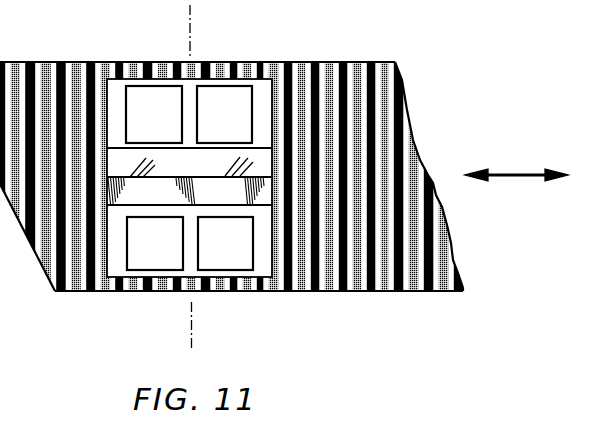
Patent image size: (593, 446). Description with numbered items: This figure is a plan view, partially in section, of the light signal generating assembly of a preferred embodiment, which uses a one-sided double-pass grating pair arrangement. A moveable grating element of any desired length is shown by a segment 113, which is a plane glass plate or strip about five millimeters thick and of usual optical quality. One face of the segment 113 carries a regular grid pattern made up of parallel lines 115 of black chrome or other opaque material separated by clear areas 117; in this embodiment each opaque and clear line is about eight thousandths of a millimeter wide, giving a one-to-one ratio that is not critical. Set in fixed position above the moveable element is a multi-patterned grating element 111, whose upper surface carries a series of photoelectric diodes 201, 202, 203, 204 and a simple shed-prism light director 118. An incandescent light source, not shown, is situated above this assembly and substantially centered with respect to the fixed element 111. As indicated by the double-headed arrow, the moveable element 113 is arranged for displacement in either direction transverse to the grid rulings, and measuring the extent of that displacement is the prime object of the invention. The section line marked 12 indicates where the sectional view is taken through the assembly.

The section line 12- 12 is at (143, 21).
The multi-patterned grating element 111 is at (121, 114).
The moveable grating element 113 is at (308, 62).
The parallel lines 115 is at (382, 291).
The clear areas 117 is at (365, 291).
The shed-prism light director 118 is at (203, 173).
The photoelectric diode 201 is at (239, 126).
The photoelectric diode 202 is at (139, 126).
The photoelectric diode 203 is at (140, 255).
The photoelectric diode 204 is at (240, 255).